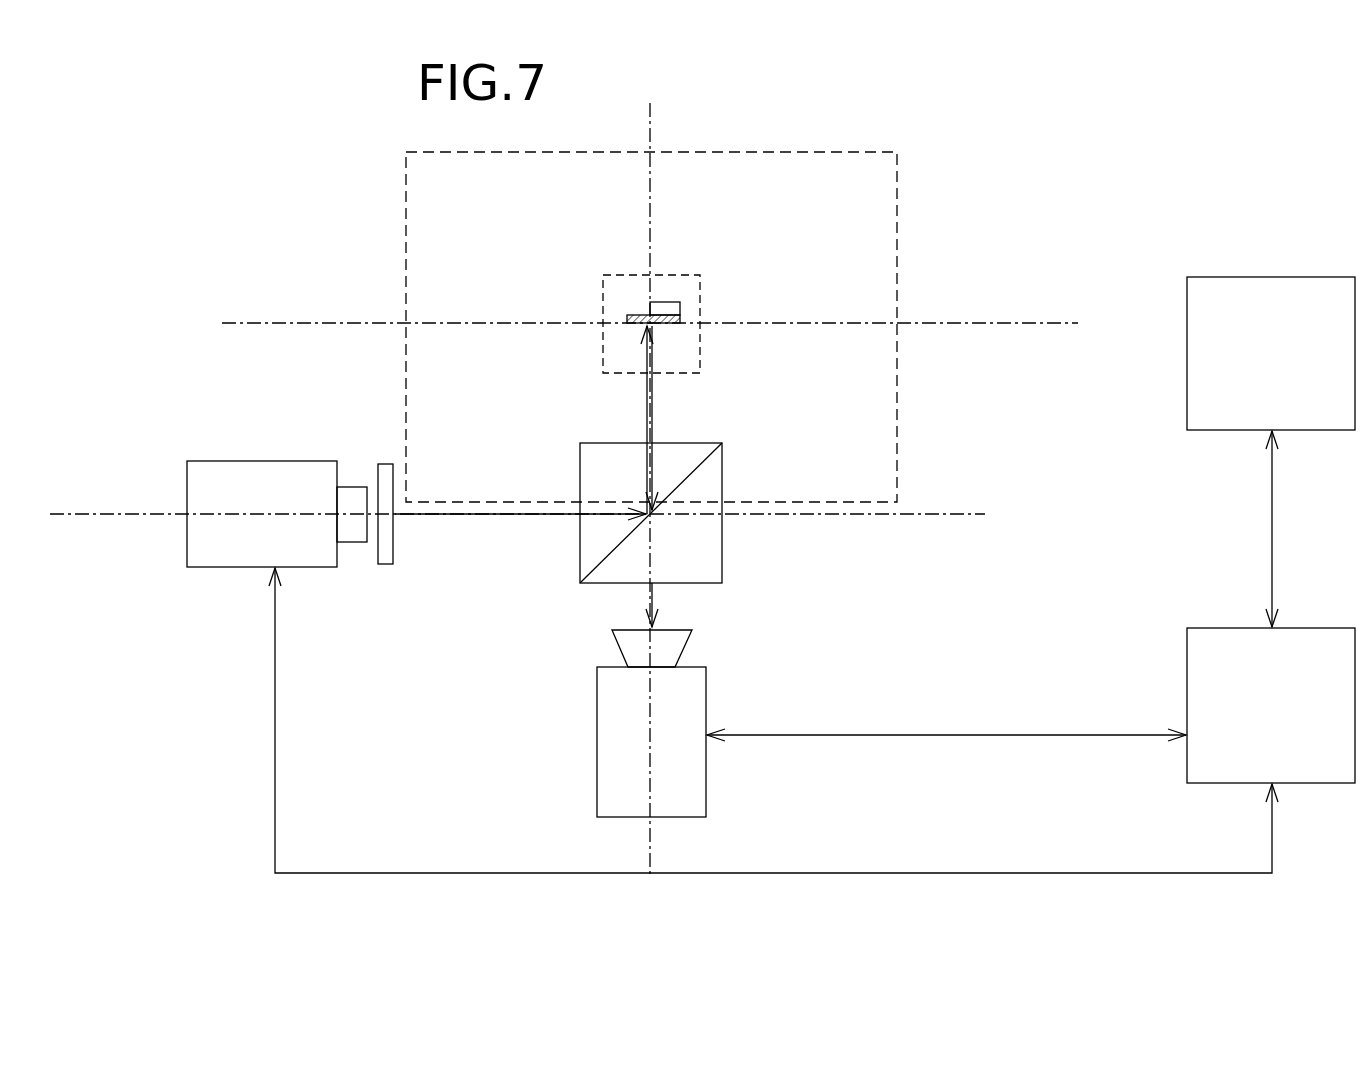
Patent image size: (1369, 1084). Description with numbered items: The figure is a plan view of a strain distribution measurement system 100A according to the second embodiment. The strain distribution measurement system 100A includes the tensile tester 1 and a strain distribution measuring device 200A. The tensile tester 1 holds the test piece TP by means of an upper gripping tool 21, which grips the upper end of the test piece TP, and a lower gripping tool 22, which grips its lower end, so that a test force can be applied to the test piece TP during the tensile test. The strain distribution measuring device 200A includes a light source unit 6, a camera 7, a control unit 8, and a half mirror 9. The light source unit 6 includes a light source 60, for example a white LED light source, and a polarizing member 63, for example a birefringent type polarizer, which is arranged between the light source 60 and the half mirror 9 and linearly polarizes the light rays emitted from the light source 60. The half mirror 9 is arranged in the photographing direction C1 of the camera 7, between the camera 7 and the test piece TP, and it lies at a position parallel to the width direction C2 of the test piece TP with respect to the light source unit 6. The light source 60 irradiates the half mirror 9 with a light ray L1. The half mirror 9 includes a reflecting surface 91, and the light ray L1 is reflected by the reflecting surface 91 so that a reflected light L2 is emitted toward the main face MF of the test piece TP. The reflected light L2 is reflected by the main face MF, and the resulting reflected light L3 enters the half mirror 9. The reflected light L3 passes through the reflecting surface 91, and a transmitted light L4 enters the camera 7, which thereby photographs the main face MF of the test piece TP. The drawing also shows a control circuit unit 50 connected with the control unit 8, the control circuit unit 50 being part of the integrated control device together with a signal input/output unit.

The strain distribution measurement system 100A is at (1106, 126).
The strain distribution measuring device 200A is at (1063, 891).
The tensile tester 1 is at (972, 188).
The upper gripping tool 21 is at (649, 295).
The lower gripping tool 22 is at (649, 295).
The test piece TP is at (632, 313).
The main face MF is at (636, 328).
The light source unit 6 is at (274, 545).
The light source 60 is at (222, 567).
The polarizing member 63 is at (388, 564).
The half mirror 9 is at (684, 513).
The reflecting surface 91 is at (700, 466).
The camera 7 is at (706, 798).
The control unit 8 is at (1318, 783).
The control circuit unit 50 is at (1273, 277).
The light ray L1 is at (485, 511).
The reflected light L2 is at (642, 416).
The reflected light L3 is at (653, 416).
The transmitted light L4 is at (655, 601).
The photographing direction C1 is at (652, 131).
The width direction C2 is at (977, 322).